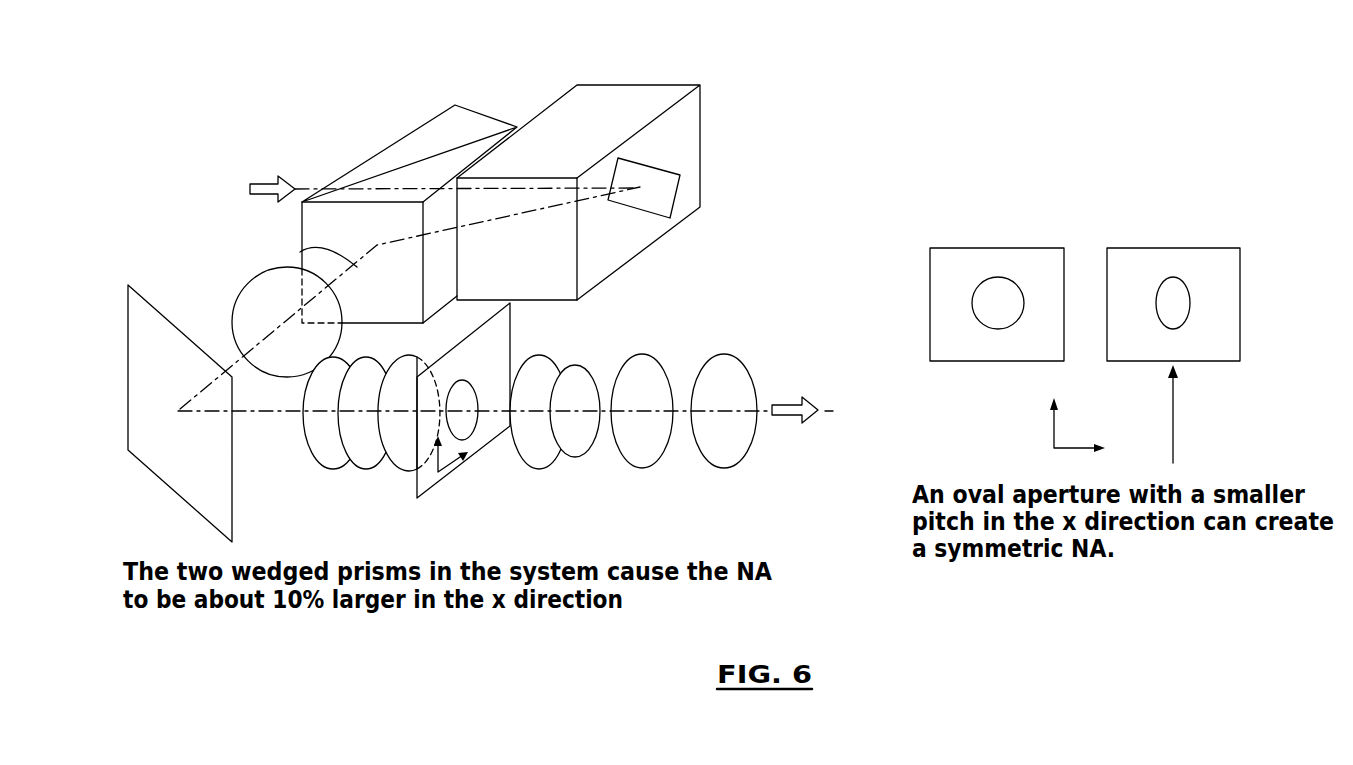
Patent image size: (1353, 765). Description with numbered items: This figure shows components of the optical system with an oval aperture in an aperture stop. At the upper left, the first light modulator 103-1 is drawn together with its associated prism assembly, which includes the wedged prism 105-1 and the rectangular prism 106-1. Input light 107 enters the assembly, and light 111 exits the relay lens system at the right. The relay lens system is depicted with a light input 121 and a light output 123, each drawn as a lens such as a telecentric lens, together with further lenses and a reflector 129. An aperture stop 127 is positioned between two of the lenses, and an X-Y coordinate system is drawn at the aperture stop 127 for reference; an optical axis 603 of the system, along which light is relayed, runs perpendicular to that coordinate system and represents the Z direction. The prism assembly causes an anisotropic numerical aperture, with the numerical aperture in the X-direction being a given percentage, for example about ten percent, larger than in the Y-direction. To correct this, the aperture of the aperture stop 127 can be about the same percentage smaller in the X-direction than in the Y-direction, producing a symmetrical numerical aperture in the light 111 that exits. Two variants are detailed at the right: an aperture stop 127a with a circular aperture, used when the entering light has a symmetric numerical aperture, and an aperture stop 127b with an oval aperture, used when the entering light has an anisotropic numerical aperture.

The prism 105-1 is at (368, 151).
The rectangular prism 106-1 is at (553, 138).
The first light modulator 103-1 is at (658, 192).
The input light 107 is at (250, 186).
The light exiting relay lens system 111 is at (815, 401).
The light input 121 is at (247, 306).
The light output 123 is at (733, 448).
The aperture stop 127 is at (476, 378).
The aperture stop with circular aperture 127a is at (930, 273).
The aperture stop with oval aperture 127b is at (1240, 265).
The reflector 129 is at (213, 458).
The optical axis 603 is at (300, 252).